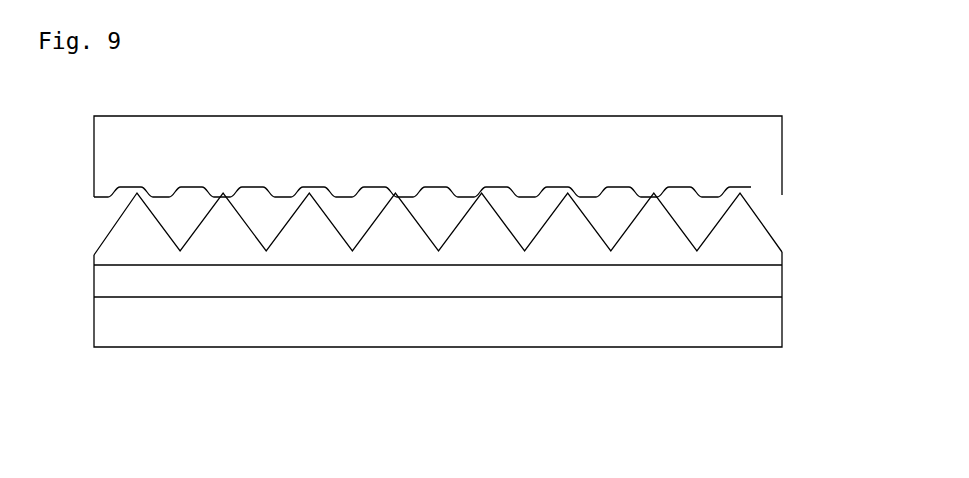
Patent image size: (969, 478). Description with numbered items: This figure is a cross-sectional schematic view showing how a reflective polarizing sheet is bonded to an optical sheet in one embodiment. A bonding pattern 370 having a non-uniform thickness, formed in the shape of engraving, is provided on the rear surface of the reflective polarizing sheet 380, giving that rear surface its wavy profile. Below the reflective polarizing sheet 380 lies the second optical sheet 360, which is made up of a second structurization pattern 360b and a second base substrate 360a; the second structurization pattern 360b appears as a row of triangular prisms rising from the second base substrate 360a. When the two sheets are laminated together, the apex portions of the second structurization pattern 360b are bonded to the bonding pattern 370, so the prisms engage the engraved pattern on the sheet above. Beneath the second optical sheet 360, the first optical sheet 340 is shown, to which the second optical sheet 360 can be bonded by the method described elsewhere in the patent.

The reflective polarizing sheet 380 is at (786, 151).
The bonding pattern 370 is at (751, 187).
The second optical sheet 360 is at (787, 275).
The second base substrate 360a is at (462, 285).
The second structurization pattern 360b is at (563, 238).
The first optical sheet 340 is at (772, 320).